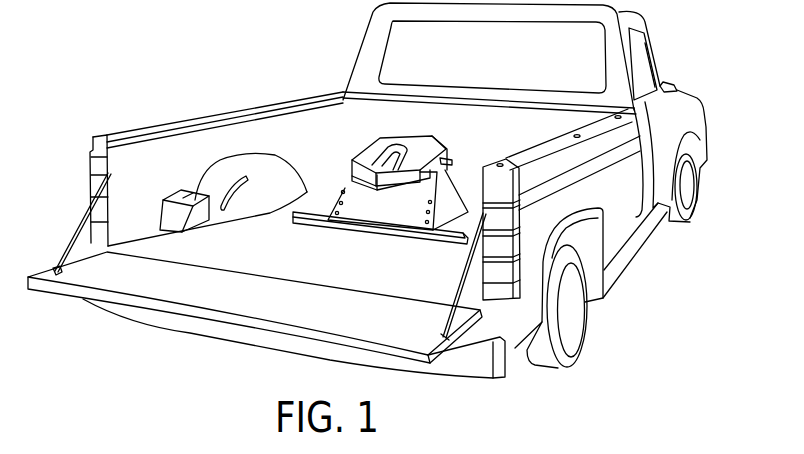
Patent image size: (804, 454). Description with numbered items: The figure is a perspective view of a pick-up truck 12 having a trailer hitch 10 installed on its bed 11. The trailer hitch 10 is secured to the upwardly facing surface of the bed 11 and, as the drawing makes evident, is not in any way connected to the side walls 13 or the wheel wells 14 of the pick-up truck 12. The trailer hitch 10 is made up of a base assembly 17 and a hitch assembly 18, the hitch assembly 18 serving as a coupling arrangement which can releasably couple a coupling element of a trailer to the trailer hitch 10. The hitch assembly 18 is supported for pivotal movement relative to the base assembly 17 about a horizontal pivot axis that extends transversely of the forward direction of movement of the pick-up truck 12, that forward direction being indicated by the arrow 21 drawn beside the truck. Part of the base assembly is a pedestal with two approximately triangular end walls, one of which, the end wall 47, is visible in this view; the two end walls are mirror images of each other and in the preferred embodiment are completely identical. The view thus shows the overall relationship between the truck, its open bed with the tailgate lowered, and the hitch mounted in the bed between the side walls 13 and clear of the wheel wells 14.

The trailer hitch 10 is at (385, 145).
The bed 11 is at (147, 243).
The pick-up truck 12 is at (652, 27).
The side walls 13 is at (130, 157).
The wheel wells 14 is at (247, 167).
The base assembly 17 is at (343, 163).
The hitch assembly 18 is at (372, 133).
The arrow 21 is at (659, 264).
The end wall 47 is at (447, 197).